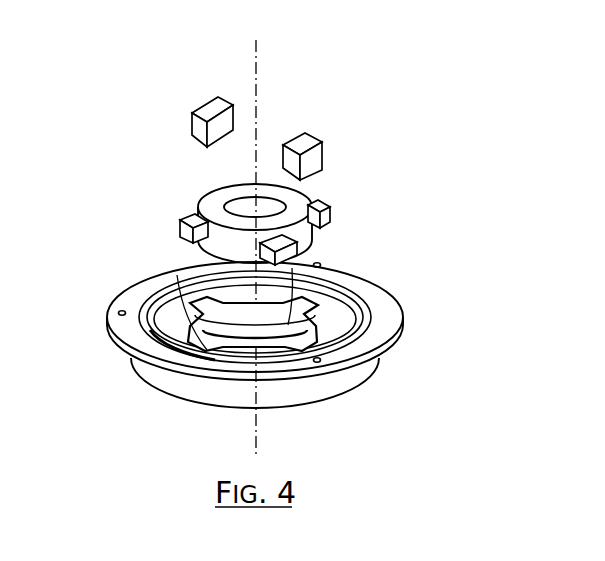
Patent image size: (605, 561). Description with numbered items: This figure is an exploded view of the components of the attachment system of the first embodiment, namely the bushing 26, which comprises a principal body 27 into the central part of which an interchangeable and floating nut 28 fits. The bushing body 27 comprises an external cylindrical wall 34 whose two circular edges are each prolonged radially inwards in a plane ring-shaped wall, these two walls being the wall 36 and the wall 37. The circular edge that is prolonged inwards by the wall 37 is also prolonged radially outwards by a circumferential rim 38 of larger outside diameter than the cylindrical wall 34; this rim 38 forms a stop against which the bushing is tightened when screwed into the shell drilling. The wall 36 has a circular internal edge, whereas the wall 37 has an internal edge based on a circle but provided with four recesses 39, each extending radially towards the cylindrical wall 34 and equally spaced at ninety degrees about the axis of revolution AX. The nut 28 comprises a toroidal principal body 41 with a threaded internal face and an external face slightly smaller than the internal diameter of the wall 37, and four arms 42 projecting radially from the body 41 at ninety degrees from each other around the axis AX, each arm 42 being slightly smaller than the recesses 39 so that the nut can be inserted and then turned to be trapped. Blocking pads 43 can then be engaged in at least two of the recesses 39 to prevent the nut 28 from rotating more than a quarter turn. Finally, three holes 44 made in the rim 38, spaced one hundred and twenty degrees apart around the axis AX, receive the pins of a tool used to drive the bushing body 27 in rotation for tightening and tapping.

The bushing 26 is at (383, 181).
The principal body 27 is at (1, 83).
The nut 28 is at (200, 172).
The external cylindrical wall 34 is at (195, 393).
The plane ring-shaped wall 36 is at (333, 318).
The plane ring-shaped wall 37 is at (356, 318).
The circumferential rim 38 is at (381, 318).
The recesses 39 is at (209, 318).
The toroidal principal body 41 is at (294, 206).
The arms 42 is at (275, 238).
The blocking pads 43 is at (305, 138).
The holes 44 is at (320, 263).
The axis of revolution AX is at (264, 66).